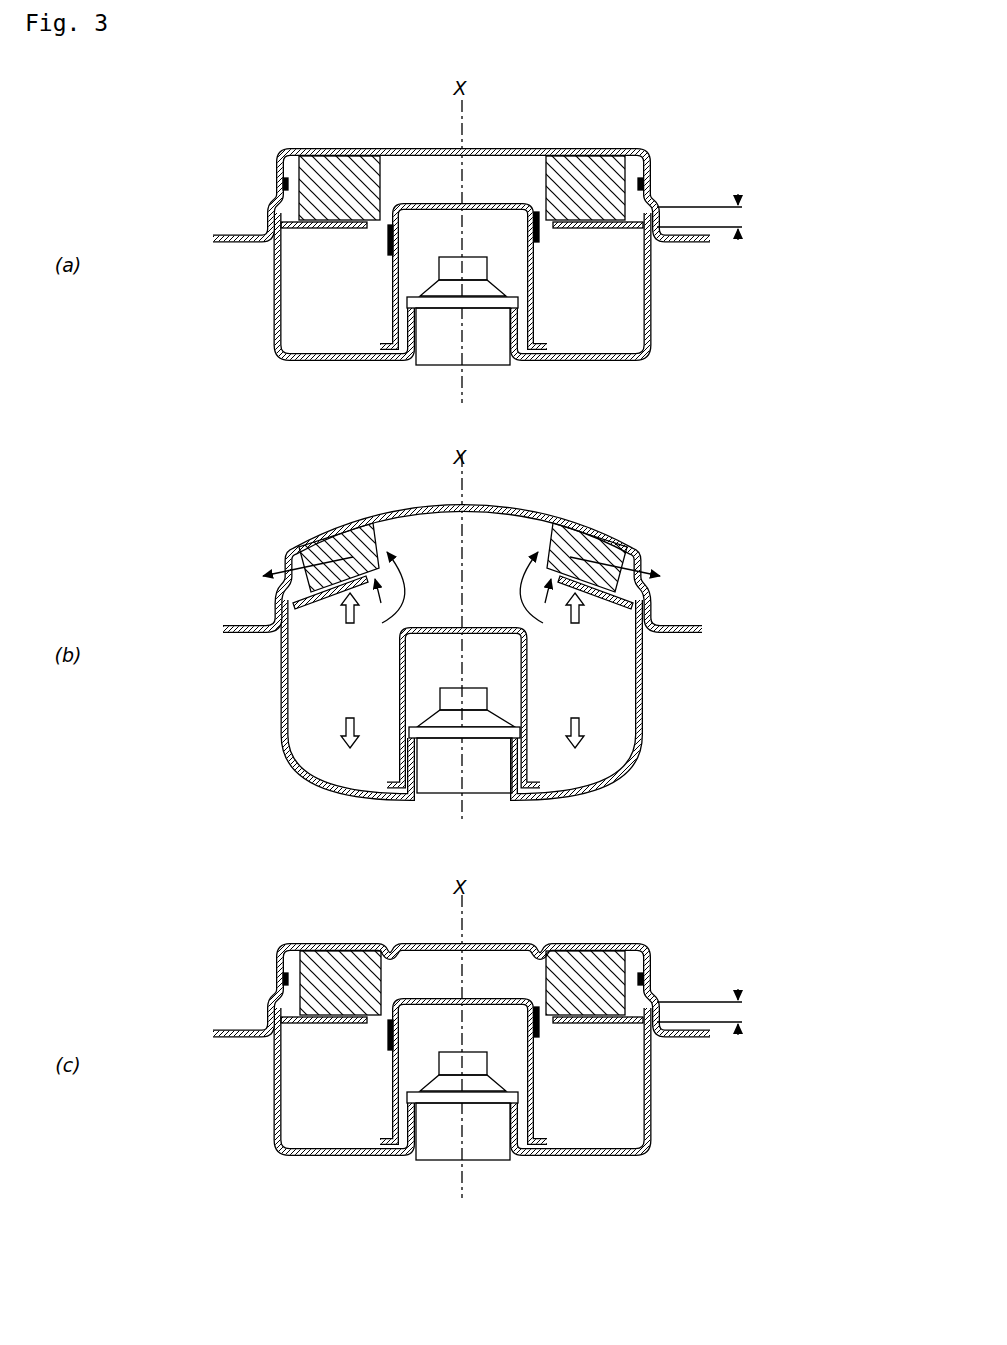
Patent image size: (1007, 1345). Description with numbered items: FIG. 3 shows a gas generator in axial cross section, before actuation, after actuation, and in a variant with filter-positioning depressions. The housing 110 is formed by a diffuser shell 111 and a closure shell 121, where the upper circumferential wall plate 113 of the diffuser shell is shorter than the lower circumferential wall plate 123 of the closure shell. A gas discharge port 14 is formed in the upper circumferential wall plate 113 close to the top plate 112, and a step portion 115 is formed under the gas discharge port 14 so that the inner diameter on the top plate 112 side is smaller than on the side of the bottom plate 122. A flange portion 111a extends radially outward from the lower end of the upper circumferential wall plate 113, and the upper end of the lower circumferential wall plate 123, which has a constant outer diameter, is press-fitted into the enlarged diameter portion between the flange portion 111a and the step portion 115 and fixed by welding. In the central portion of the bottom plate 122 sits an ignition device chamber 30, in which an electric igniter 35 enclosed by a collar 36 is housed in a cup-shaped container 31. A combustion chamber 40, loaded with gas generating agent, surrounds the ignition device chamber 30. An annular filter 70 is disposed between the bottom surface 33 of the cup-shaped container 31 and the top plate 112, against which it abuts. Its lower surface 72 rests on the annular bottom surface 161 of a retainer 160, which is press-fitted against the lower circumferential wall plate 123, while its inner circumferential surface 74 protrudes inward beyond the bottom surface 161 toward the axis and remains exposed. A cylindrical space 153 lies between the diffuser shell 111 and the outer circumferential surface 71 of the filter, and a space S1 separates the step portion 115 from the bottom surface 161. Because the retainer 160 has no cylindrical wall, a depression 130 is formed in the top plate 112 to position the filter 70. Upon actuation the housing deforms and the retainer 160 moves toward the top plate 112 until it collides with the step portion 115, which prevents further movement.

The gas discharge port 14 is at (649, 180).
The ignition device chamber 30 is at (422, 248).
The cup-shaped container 31 is at (483, 199).
The bottom surface 33 is at (430, 203).
The electric igniter 35 is at (470, 257).
The collar 36 is at (449, 341).
The combustion chamber 40 is at (317, 319).
The annular filter 70 is at (590, 157).
The outer circumferential surface 71 is at (631, 161).
The lower surface 72 is at (545, 228).
The inner circumferential surface 74 is at (546, 177).
The housing 110 is at (458, 677).
The diffuser shell 111 is at (260, 220).
The flange portion 111a is at (676, 242).
The top plate 112 is at (402, 148).
The upper circumferential wall plate 113 is at (661, 222).
The step portion 115 is at (266, 206).
The closure shell 121 is at (270, 293).
The bottom plate 122 is at (578, 362).
The lower circumferential wall plate 123 is at (653, 318).
The depression 130 is at (388, 950).
The cylindrical space 153 is at (286, 164).
The retainer 160 is at (314, 231).
The bottom surface 161 is at (598, 229).
The space S1 is at (717, 614).